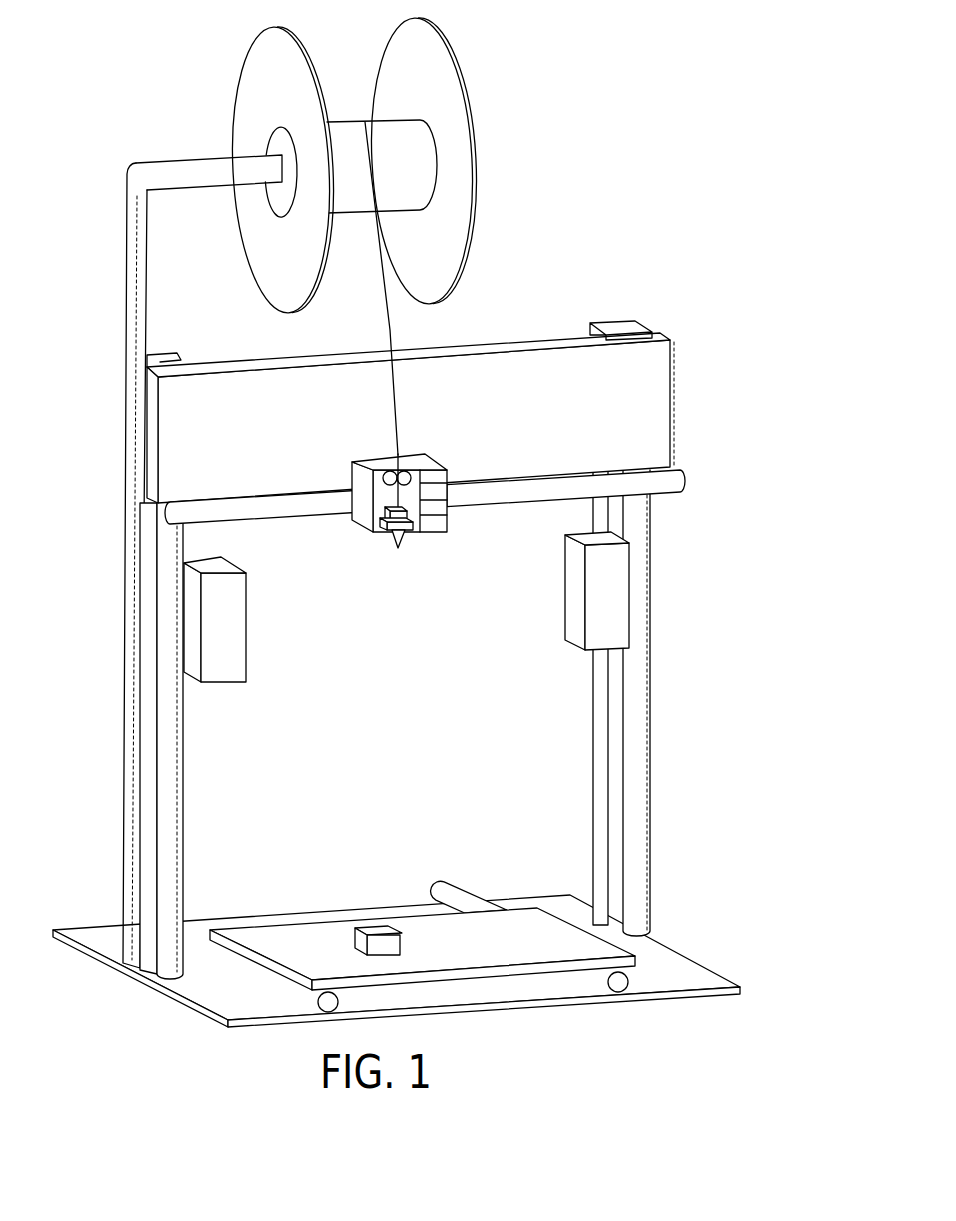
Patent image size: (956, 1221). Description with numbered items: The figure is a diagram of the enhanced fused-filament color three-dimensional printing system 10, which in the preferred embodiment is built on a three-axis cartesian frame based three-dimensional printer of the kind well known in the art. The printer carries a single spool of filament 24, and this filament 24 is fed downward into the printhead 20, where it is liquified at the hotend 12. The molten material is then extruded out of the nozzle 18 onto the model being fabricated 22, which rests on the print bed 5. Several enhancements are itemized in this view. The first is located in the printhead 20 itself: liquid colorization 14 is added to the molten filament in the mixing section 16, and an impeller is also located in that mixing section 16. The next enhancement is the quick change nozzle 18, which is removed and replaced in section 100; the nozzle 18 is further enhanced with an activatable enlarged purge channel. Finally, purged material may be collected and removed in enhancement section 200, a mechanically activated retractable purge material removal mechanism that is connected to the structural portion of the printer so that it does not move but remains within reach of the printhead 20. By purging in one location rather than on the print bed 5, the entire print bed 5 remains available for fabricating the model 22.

The print bed 5 is at (510, 968).
The enhanced 3D color printing system 10 is at (762, 945).
The hotend 12 is at (417, 533).
The liquid colorization 14 is at (448, 467).
The mixing section 16 is at (373, 531).
The nozzle 18 is at (391, 552).
The printhead 20 is at (366, 489).
The 3D model being fabricated 22 is at (368, 928).
The filament 24 is at (403, 342).
The quick change nozzle section 100 is at (608, 608).
The purge material removal mechanism 200 is at (225, 645).